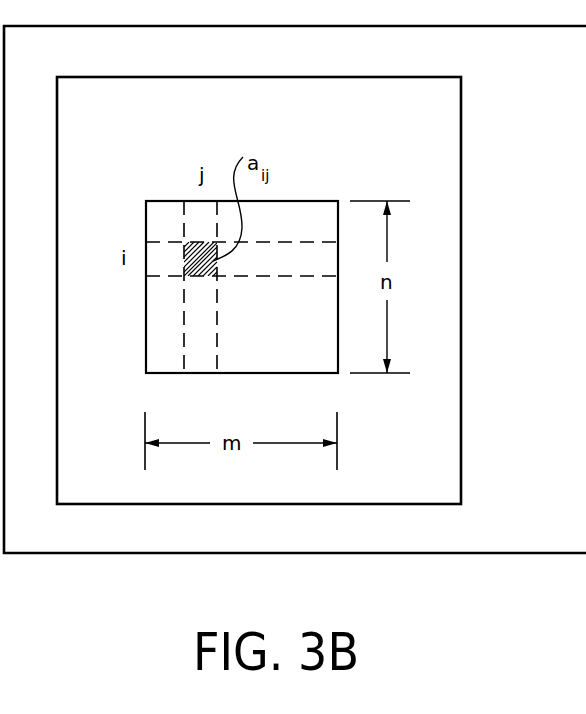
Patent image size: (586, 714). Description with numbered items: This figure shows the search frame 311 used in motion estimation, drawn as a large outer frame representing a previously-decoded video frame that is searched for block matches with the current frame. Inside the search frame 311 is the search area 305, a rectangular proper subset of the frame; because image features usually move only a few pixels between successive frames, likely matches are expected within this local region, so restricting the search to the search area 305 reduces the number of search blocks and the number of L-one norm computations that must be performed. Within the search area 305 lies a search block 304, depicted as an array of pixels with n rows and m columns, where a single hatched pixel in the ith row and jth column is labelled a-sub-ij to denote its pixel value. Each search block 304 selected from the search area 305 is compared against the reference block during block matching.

The search frame 311 is at (74, 553).
The search area 305 is at (461, 150).
The search block 304 is at (250, 373).